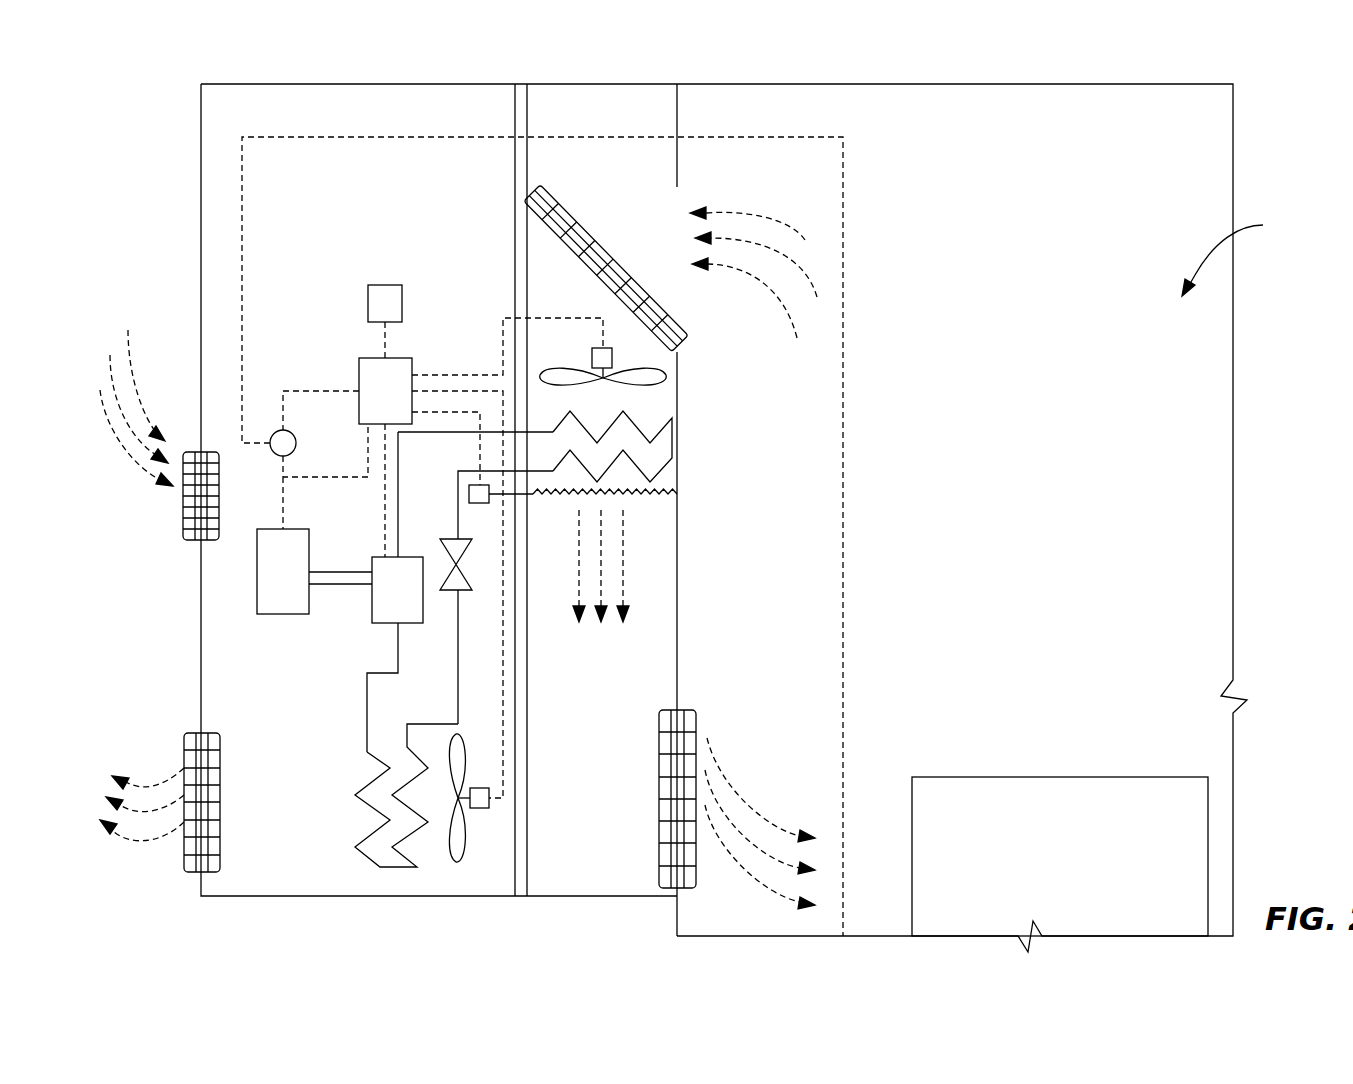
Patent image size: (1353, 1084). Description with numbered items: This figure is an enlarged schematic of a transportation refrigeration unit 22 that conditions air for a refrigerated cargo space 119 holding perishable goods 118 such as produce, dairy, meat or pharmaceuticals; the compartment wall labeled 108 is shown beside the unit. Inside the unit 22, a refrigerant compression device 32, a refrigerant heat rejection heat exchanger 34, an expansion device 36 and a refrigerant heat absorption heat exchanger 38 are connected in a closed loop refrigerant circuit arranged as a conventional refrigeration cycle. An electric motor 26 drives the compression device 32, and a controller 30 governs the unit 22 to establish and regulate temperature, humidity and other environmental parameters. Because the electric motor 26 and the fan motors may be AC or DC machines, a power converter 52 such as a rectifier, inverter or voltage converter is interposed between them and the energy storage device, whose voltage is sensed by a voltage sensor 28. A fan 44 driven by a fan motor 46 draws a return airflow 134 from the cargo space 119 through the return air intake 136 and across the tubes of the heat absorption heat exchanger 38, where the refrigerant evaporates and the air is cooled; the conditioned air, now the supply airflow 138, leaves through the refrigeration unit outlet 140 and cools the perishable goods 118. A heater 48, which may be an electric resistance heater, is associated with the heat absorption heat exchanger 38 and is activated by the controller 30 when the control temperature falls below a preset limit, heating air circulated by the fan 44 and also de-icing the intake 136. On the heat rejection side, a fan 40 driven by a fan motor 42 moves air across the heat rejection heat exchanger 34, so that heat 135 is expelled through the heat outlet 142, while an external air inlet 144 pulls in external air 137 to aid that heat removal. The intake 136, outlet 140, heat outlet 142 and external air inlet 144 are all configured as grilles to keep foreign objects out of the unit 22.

The transportation refrigeration unit 22 is at (300, 84).
The compartment 108 is at (990, 84).
The perishable goods 118 is at (981, 777).
The refrigerated cargo space 119 is at (1252, 253).
The return air intake 136 is at (600, 247).
The return airflow 134 is at (792, 325).
The controller 30 is at (402, 300).
The power converter 52 is at (359, 375).
The voltage sensor 28 is at (273, 455).
The electric motor 26 is at (280, 614).
The refrigerant compression device 32 is at (372, 605).
The expansion device 36 is at (460, 592).
The refrigerant heat rejection heat exchanger 34 is at (387, 867).
The refrigerant heat absorption heat exchanger 38 is at (672, 424).
The heater 48 is at (668, 491).
The fan 44 is at (667, 378).
The fan motor 46 is at (592, 358).
The fan 40 is at (460, 860).
The fan motor 42 is at (490, 806).
The external air inlet 144 is at (183, 516).
The external air 137 is at (108, 420).
The heat outlet 142 is at (184, 745).
The heat 135 is at (147, 837).
The refrigeration unit outlet 140 is at (659, 723).
The supply airflow 138 is at (733, 798).